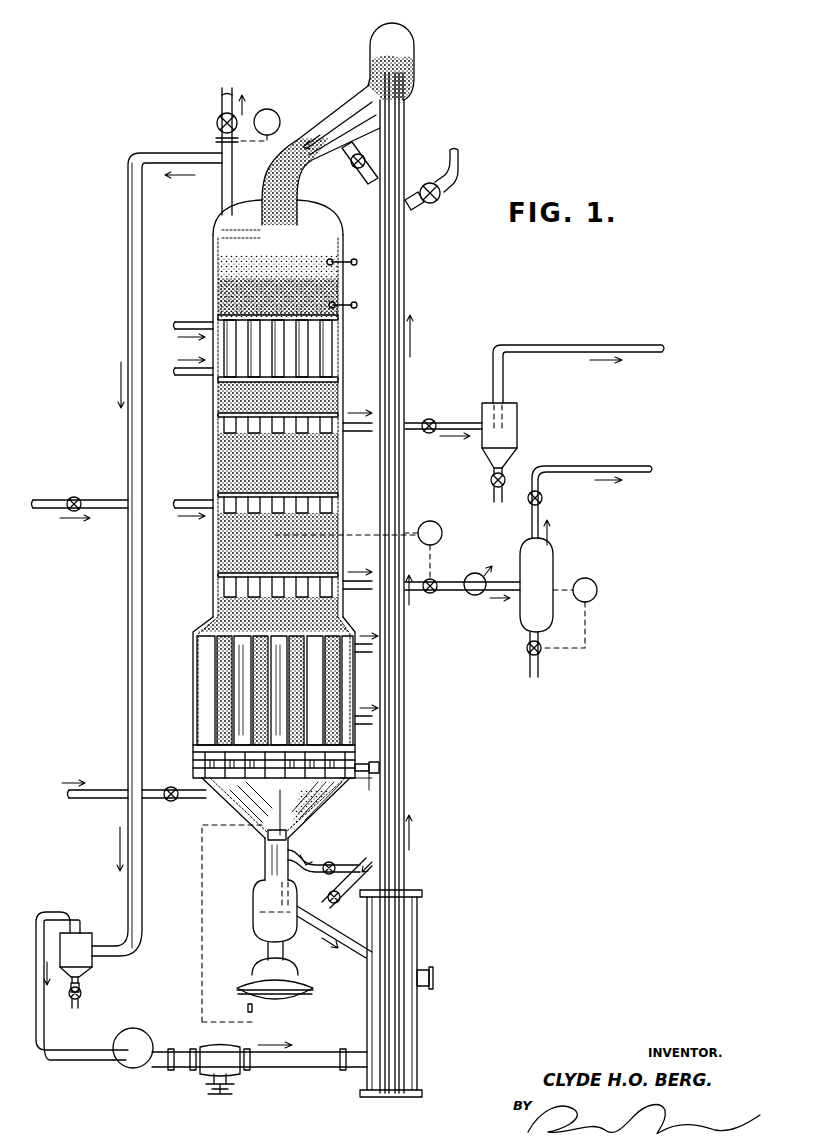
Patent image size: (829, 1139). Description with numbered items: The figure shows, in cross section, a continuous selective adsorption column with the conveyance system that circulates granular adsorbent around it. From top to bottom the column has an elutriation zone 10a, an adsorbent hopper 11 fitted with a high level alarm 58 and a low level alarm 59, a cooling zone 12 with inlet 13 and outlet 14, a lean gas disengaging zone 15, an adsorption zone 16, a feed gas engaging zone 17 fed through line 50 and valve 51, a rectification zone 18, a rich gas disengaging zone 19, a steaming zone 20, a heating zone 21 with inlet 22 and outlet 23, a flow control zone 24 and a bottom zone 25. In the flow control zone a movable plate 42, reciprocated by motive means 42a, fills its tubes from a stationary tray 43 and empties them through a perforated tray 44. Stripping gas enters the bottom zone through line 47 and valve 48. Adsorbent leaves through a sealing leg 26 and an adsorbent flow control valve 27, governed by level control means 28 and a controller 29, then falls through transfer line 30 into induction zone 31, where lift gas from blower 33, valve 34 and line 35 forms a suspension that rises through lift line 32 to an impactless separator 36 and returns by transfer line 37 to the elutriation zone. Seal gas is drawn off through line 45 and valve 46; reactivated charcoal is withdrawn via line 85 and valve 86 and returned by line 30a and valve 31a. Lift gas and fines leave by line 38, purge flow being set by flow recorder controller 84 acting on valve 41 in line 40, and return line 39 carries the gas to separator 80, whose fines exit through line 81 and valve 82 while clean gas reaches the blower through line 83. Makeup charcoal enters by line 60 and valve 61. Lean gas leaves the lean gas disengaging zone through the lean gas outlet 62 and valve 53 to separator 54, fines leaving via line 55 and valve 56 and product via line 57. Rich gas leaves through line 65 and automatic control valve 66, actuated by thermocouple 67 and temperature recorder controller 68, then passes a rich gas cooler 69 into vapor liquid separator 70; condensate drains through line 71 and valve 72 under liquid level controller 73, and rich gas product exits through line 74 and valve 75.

The elutriation zone 10a is at (250, 246).
The adsorbent hopper 11 is at (248, 294).
The adsorbent cooling zone 12 is at (250, 344).
The inlet 13 is at (200, 372).
The outlet 14 is at (192, 320).
The lean gas disengaging zone 15 is at (222, 428).
The adsorption zone 16 is at (240, 455).
The feed gas engaging zone 17 is at (205, 515).
The rectification zone 18 is at (240, 553).
The rich gas disengaging zone 19 is at (225, 586).
The steaming zone 20 is at (200, 628).
The heating zone 21 is at (240, 692).
The inlet 22 is at (364, 726).
The outlet 23 is at (362, 655).
The adsorbent flow control zone 24 is at (200, 762).
The bottom zone 25 is at (260, 800).
The sealing leg 26 is at (268, 862).
The adsorbent flow control valve 27 is at (256, 912).
The level control means 28 is at (290, 834).
The pneumatic or electrical controller 29 is at (248, 990).
The transfer line 30 is at (318, 928).
The line 30a is at (350, 905).
The induction zone 31 is at (368, 996).
The valve 31a is at (324, 894).
The lift line 32 is at (406, 798).
The lift gas blower 33 is at (130, 1068).
The valve 34 is at (210, 1076).
The line 35 is at (272, 1068).
The impactless separator 36 is at (414, 60).
The transfer line 37 is at (342, 112).
The line 38 is at (222, 188).
The lift gas return line 39 is at (126, 326).
The line 40 is at (222, 95).
The valve 41 is at (217, 123).
The movable plate 42 is at (372, 775).
The motive means 42a is at (367, 799).
The stationary tray 43 is at (366, 762).
The perforated tray 44 is at (300, 814).
The line 45 is at (304, 862).
The valve 46 is at (338, 858).
The line 47 is at (110, 790).
The valve 48 is at (190, 781).
The line 50 is at (50, 510).
The valve 51 is at (108, 492).
The valve 53 is at (425, 420).
The separator 54 is at (517, 427).
The line 55 is at (492, 470).
The valve 56 is at (490, 482).
The line 57 is at (496, 345).
The high level alarm 58 is at (354, 265).
The low level alarm 59 is at (354, 308).
The line 60 is at (412, 210).
The valve 61 is at (440, 196).
The lean gas outlet 62 is at (365, 432).
The line 65 is at (365, 590).
The automatic control valve 66 is at (425, 593).
The thermocouple 67 is at (293, 541).
The temperature recorder controller 68 is at (438, 542).
The rich gas cooler 69 is at (472, 596).
The vapor liquid separator 70 is at (545, 572).
The line 71 is at (530, 642).
The valve 72 is at (541, 652).
The liquid level controller 73 is at (595, 598).
The line 74 is at (540, 535).
The valve 75 is at (543, 496).
The separator 80 is at (80, 932).
The line 81 is at (82, 985).
The valve 82 is at (82, 995).
The line 83 is at (38, 1028).
The flow recorder controller 84 is at (280, 113).
The line 85 is at (345, 160).
The valve 86 is at (358, 170).